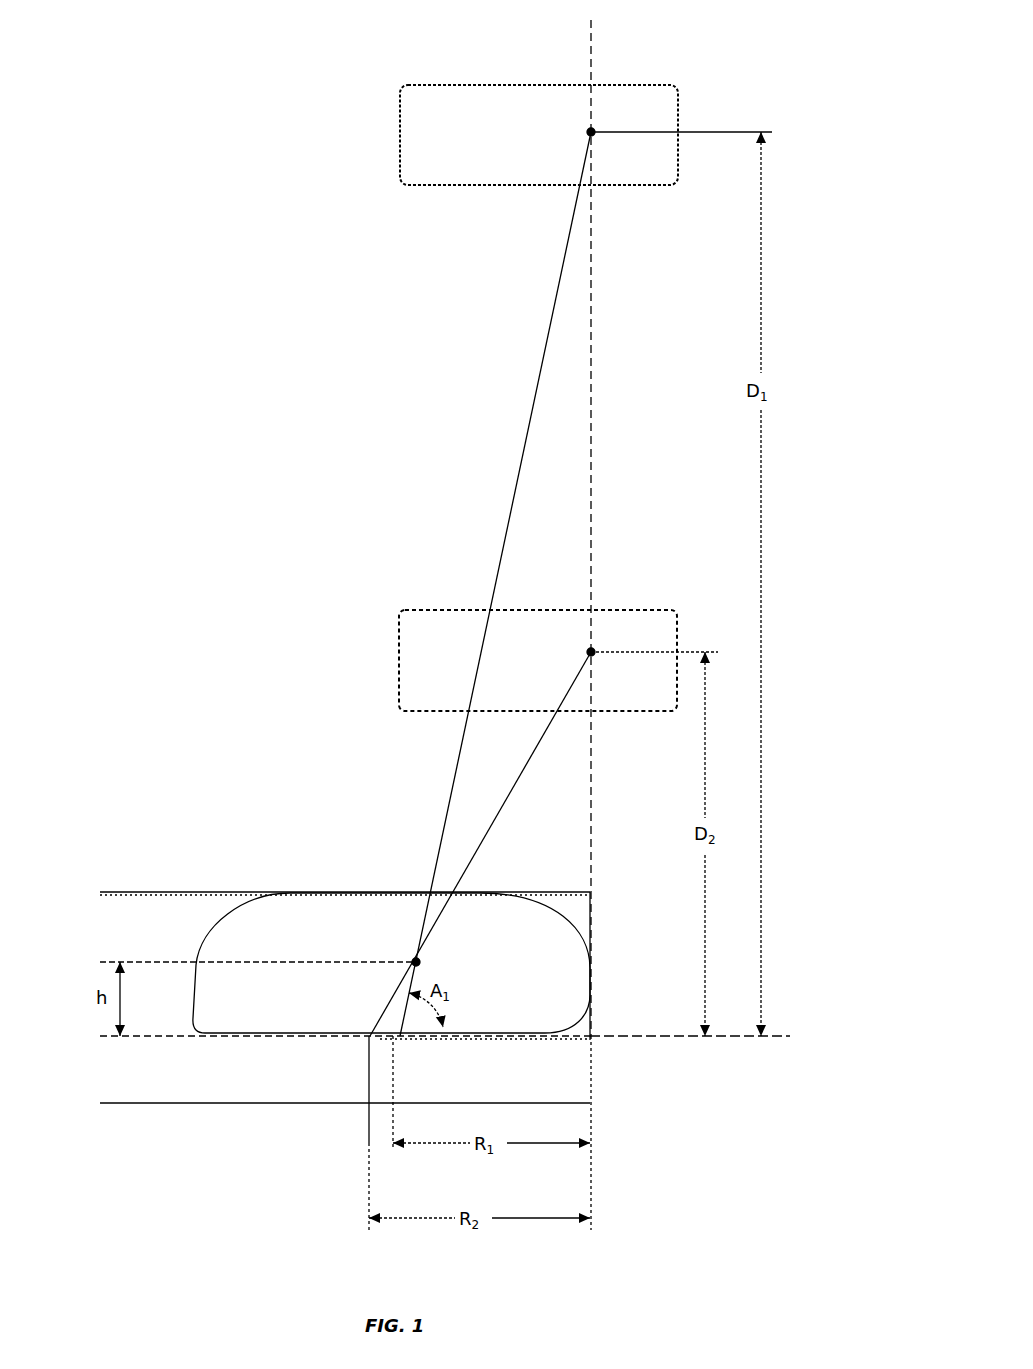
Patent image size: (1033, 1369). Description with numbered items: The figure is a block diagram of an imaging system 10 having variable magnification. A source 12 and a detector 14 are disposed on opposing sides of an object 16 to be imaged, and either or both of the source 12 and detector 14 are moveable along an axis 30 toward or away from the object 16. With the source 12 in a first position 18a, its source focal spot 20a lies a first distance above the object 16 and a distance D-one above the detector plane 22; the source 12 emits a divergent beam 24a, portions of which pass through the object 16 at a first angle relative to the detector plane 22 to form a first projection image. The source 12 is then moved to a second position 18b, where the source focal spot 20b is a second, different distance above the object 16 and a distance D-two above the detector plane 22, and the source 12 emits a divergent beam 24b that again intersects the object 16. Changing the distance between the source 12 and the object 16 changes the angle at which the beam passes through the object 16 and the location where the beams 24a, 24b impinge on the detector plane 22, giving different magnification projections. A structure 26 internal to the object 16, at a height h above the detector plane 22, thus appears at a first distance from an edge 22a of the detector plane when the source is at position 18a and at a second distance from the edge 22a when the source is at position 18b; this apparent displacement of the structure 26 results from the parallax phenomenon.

The imaging system 10 is at (296, 57).
The source 12 is at (509, 376).
The detector 14 is at (593, 1103).
The object 16 is at (558, 892).
The first position 18a is at (390, 167).
The second position 18b is at (390, 676).
The source focal spot 20a is at (588, 131).
The source focal spot 20b is at (588, 650).
The detector plane 22 is at (535, 1038).
The edge of the detector plane 22a is at (597, 1034).
The divergent beam 24a is at (538, 355).
The divergent beam 24b is at (503, 792).
The structure 26 is at (412, 958).
The axis 30 is at (596, 30).